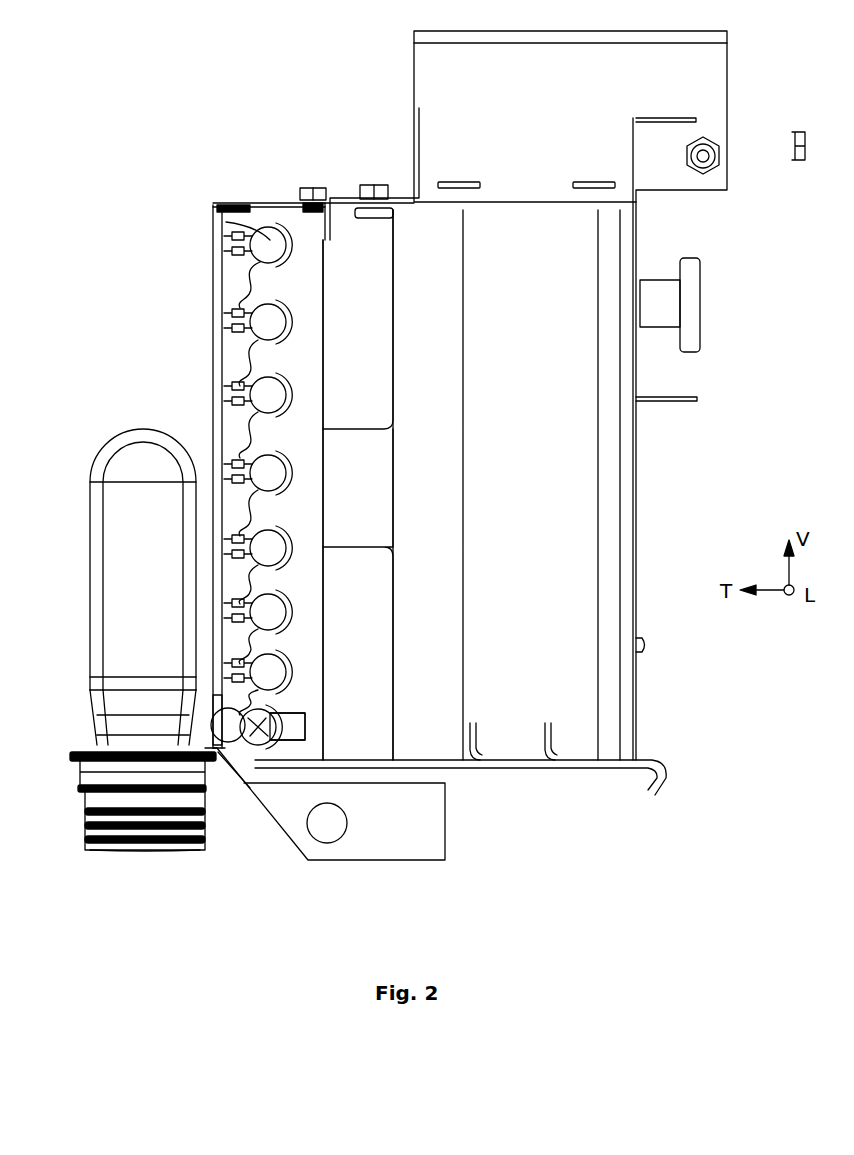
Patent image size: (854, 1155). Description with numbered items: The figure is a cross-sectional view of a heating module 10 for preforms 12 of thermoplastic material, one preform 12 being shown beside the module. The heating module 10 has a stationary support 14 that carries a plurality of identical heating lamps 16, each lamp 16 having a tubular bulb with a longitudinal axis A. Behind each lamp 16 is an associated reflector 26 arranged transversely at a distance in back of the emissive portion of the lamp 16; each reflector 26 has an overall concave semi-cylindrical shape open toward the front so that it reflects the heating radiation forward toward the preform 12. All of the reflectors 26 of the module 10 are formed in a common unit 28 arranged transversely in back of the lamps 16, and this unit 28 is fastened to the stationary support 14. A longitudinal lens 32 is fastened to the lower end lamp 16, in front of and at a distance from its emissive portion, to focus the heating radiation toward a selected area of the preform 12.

The heating module 10 is at (212, 162).
The preform 12 is at (80, 526).
The stationary support 14 is at (358, 250).
The heating lamp 16 is at (262, 250).
The reflector 26 is at (215, 225).
The common unit 28 is at (306, 246).
The longitudinal lens 32 is at (215, 732).
The longitudinal axis A is at (283, 705).